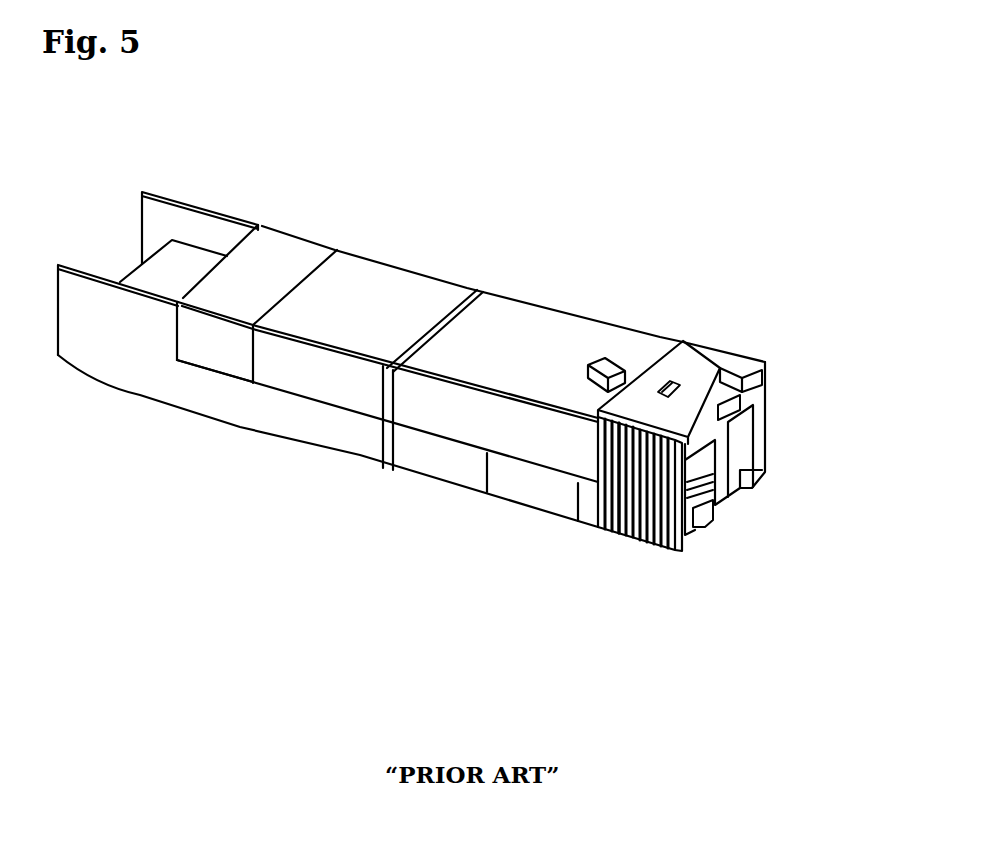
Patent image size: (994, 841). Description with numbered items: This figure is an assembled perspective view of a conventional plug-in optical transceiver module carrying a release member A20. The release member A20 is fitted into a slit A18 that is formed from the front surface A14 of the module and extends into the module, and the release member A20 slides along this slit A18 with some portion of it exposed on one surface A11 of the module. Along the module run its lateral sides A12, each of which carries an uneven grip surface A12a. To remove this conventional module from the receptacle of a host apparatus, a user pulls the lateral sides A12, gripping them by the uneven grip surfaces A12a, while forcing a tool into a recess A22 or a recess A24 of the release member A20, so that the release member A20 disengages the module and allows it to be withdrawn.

The surface of the optical transceiver module A11 is at (752, 360).
The lateral sides A12 is at (670, 510).
The uneven grip surface A12a is at (618, 498).
The front surface A14 is at (763, 378).
The slit A18 is at (733, 415).
The release member A20 is at (690, 373).
The recess A22 is at (737, 412).
The recess A24 is at (670, 380).